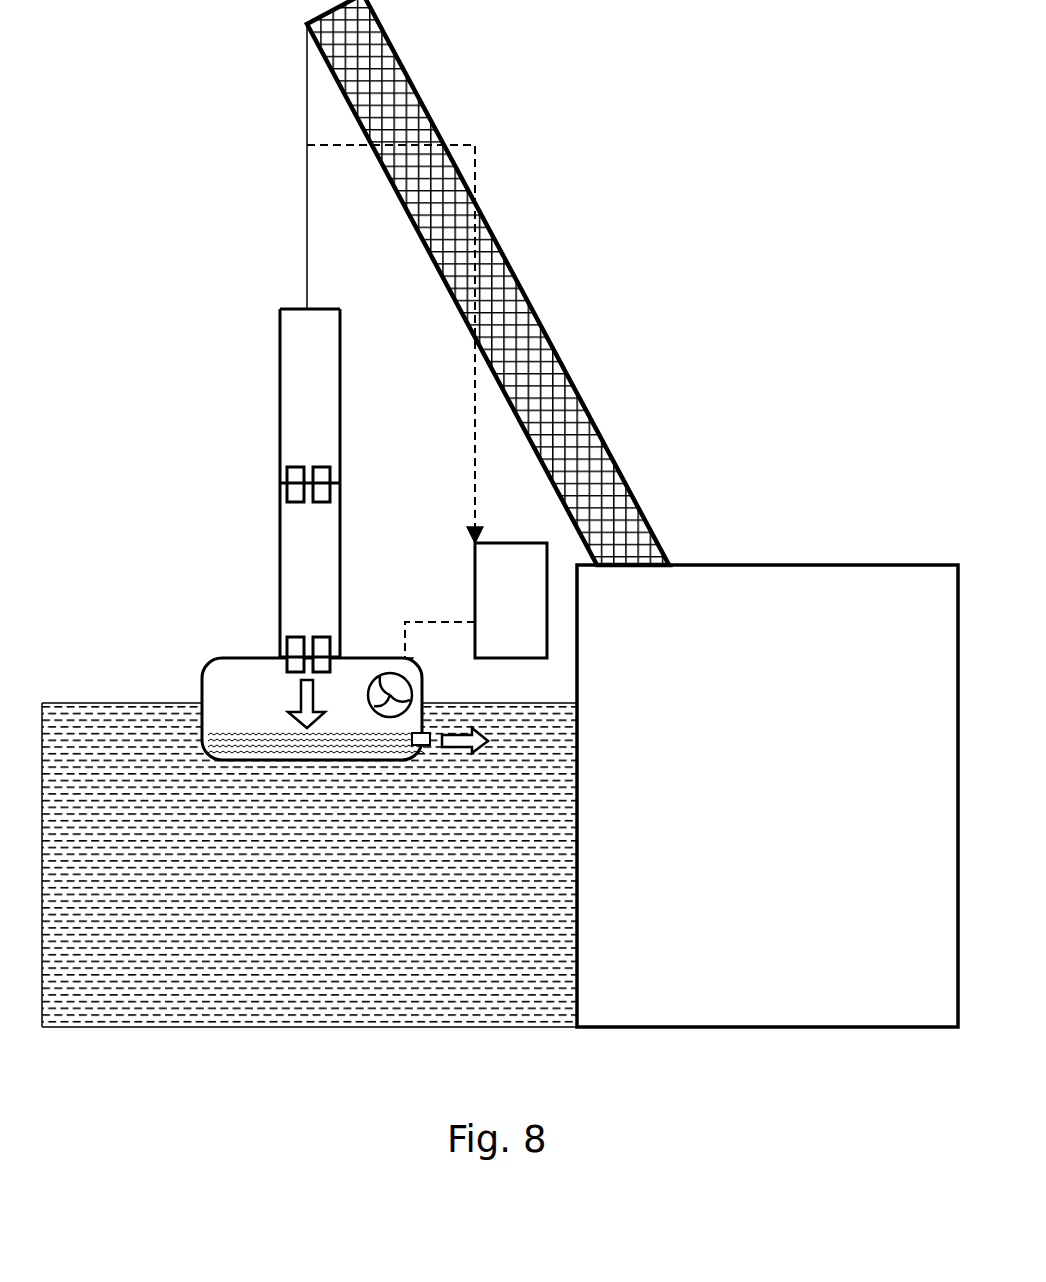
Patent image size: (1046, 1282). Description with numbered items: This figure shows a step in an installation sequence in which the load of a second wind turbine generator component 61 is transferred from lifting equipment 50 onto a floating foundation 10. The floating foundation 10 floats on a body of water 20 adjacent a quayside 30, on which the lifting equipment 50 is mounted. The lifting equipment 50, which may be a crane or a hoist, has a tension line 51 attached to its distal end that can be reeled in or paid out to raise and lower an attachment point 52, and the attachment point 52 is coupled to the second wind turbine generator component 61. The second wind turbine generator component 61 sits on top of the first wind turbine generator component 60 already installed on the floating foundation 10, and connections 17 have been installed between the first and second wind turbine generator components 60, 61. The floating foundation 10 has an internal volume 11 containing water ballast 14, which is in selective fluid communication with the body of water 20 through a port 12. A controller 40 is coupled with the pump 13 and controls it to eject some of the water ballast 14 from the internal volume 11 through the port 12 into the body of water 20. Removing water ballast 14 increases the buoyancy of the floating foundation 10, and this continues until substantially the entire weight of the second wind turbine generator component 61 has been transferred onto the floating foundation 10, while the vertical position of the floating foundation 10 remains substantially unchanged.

The floating foundation 10 is at (310, 693).
The internal volume 11 is at (263, 701).
The port 12 is at (423, 750).
The pump 13 is at (410, 692).
The water ballast 14 is at (238, 748).
The connections 17 is at (316, 458).
The body of water 20 is at (313, 912).
The quayside 30 is at (771, 793).
The controller 40 is at (525, 605).
The lifting equipment 50 is at (500, 253).
The tension line 51 is at (305, 118).
The attachment point 52 is at (279, 309).
The first wind turbine generator component 60 is at (323, 583).
The second wind turbine generator component 61 is at (323, 380).